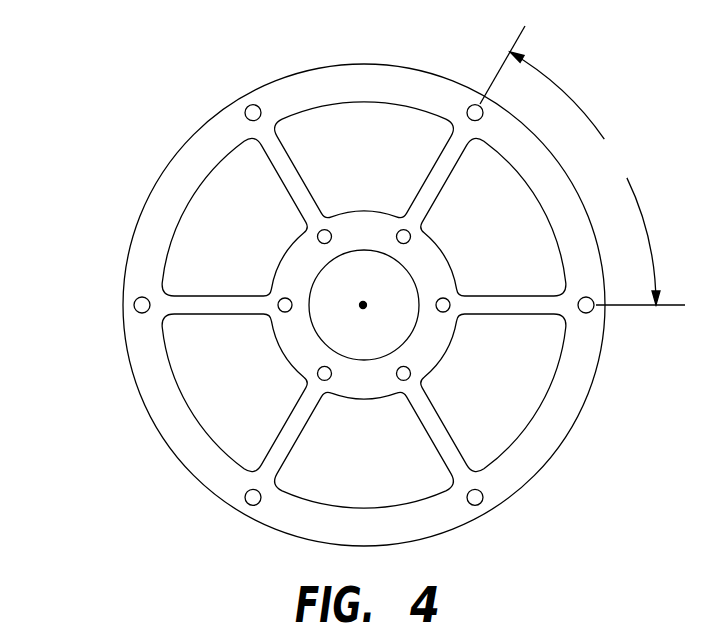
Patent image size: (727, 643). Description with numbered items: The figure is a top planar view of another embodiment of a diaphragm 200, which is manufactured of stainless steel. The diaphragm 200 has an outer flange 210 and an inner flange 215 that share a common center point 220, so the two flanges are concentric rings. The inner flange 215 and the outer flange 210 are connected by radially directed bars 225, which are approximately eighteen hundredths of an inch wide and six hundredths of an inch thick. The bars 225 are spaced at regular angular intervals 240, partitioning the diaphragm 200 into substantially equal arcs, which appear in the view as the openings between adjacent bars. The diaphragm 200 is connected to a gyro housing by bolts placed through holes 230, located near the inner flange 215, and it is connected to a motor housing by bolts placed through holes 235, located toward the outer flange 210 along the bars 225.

The diaphragm 200 is at (387, 286).
The outer flange 210 is at (142, 338).
The inner flange 215 is at (288, 332).
The center point 220 is at (363, 305).
The radially directed bars 225 is at (287, 437).
The holes 230 is at (411, 373).
The holes 235 is at (481, 501).
The angular intervals 240 is at (678, 37).